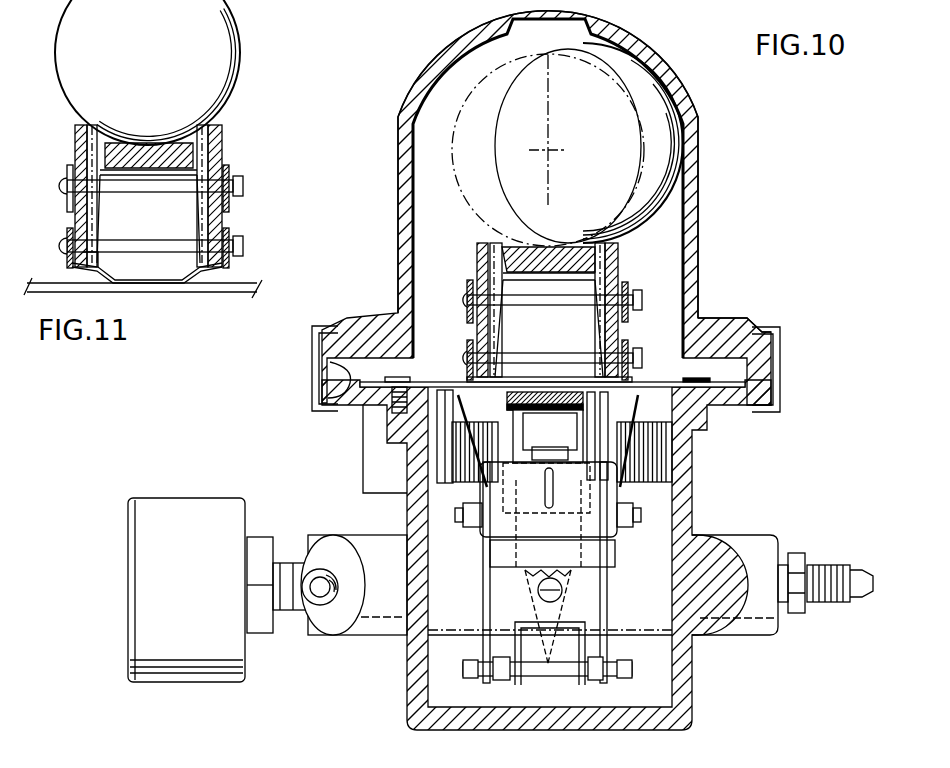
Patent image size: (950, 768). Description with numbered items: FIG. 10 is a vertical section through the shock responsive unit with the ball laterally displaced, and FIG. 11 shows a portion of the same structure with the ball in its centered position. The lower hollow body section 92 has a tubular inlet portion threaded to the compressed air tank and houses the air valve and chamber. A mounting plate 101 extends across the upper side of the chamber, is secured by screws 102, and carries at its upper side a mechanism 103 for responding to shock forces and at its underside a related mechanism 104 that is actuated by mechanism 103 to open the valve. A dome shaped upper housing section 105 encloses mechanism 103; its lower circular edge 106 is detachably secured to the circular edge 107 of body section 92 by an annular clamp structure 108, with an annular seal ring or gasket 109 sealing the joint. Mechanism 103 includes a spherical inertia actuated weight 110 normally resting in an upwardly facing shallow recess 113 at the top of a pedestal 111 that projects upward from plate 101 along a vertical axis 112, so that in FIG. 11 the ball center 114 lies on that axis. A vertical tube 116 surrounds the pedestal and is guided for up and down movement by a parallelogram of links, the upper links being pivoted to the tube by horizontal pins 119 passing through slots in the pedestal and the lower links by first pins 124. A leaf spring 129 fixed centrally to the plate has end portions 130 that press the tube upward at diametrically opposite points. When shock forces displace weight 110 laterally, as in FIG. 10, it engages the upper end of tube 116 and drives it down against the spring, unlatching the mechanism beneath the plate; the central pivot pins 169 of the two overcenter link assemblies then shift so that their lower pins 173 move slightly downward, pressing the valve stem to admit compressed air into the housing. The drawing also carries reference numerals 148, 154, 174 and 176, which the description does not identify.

In FIG. 10, the lower hollow body section 92 is at (700, 527).
In FIG. 10, the mounting plate 101 is at (657, 380).
In FIG. 11, the mounting plate 101 is at (255, 285).
In FIG. 10, the screws 102 is at (405, 380).
In FIG. 10, the mechanism for responding to shock forces 103 is at (660, 250).
In FIG. 10, the related mechanism 104 is at (665, 490).
In FIG. 10, the dome shaped upper housing section 105 is at (698, 168).
In FIG. 10, the lower circular edge 106 is at (757, 335).
In FIG. 10, the circular edge 107 is at (780, 390).
In FIG. 10, the annular clamp structure 108 is at (313, 357).
In FIG. 10, the annular seal ring or gasket 109 is at (330, 386).
In FIG. 10, the inertia actuated weight 110 is at (670, 118).
In FIG. 11, the inertia actuated weight 110 is at (237, 43).
In FIG. 11, the pedestal 111 is at (180, 153).
In FIG. 10, the vertical axis 112 is at (552, 80).
In FIG. 11, the upwardly facing shallow recess 113 is at (112, 137).
In FIG. 10, the center 114 is at (559, 148).
In FIG. 11, the vertical tube 116 is at (217, 160).
In FIG. 11, the horizontal pin 119 is at (107, 185).
In FIG. 11, the first pin 124 is at (128, 247).
In FIG. 11, the leaf spring 129 is at (190, 283).
In FIG. 11, the end portions 130 is at (70, 268).
In FIG. 10, the adjusting screw 148 is at (540, 607).
In FIG. 10, the core 154 is at (528, 474).
In FIG. 10, the central pivot pins 169 is at (463, 512).
In FIG. 10, the lower pins 173 is at (528, 673).
In FIG. 10, the gauge / connector box 174 is at (175, 500).
In FIG. 10, the inlet fitting 176 is at (320, 603).